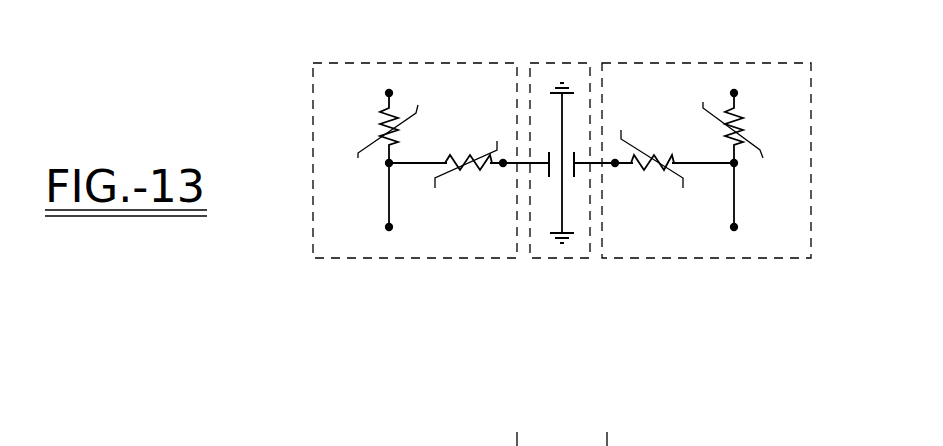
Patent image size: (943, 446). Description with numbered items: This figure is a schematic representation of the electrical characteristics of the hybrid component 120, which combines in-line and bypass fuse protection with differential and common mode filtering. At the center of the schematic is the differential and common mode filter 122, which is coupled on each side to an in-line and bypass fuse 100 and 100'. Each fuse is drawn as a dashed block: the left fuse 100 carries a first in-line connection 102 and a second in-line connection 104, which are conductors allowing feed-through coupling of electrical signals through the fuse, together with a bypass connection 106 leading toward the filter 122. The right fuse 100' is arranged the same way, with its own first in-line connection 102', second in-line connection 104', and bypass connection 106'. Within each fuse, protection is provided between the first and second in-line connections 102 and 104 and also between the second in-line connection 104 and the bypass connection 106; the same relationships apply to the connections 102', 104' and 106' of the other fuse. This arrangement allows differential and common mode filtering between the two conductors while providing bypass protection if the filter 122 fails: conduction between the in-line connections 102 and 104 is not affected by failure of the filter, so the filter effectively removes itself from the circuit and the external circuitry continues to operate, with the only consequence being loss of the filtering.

The component 120 is at (288, 98).
The in-line and bypass fuse 100 is at (415, 133).
The in-line and bypass fuse 100' is at (706, 196).
The differential and common mode filter 122 is at (561, 62).
The first in-line connection 102 is at (360, 85).
The first in-line connection 102' is at (751, 90).
The second in-line connection 104 is at (348, 235).
The second in-line connection 104' is at (774, 235).
The bypass connection 106 is at (471, 185).
The bypass connection 106' is at (650, 180).